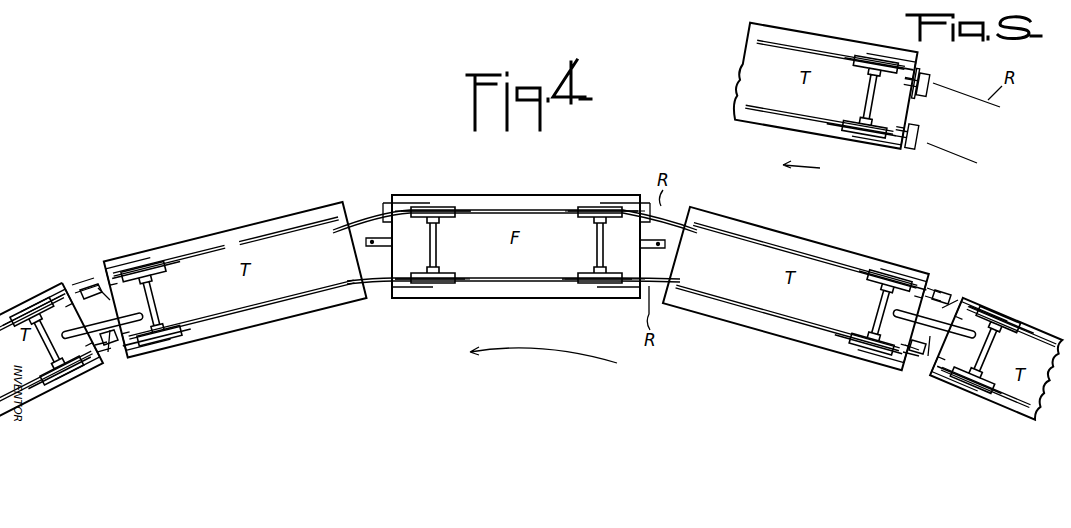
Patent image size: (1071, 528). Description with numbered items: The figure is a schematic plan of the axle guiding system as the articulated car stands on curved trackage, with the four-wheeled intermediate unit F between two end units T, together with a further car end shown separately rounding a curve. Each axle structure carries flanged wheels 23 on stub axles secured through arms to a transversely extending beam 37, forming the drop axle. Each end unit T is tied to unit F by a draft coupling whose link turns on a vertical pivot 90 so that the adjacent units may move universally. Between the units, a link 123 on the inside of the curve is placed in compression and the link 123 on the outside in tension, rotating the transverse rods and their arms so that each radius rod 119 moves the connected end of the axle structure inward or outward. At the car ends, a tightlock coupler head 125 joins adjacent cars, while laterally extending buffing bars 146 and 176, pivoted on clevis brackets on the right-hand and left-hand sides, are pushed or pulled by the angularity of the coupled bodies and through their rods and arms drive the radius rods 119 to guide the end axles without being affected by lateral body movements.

In FIG. 4, the flanged wheels 23 is at (592, 286).
In FIG. 4, the transversely extending beam 37 is at (992, 350).
In FIG. 5, the transversely extending beam 37 is at (866, 92).
In FIG. 4, the vertical pivot 90 is at (660, 248).
In FIG. 4, the radius rod 119 is at (960, 392).
In FIG. 4, the link 123 is at (663, 280).
In FIG. 4, the tightlock coupler head 125 is at (925, 325).
In FIG. 4, the buffing bar 146 is at (914, 357).
In FIG. 4, the buffing bar 176 is at (926, 356).
In FIG. 5, the buffing bar 176 is at (934, 74).